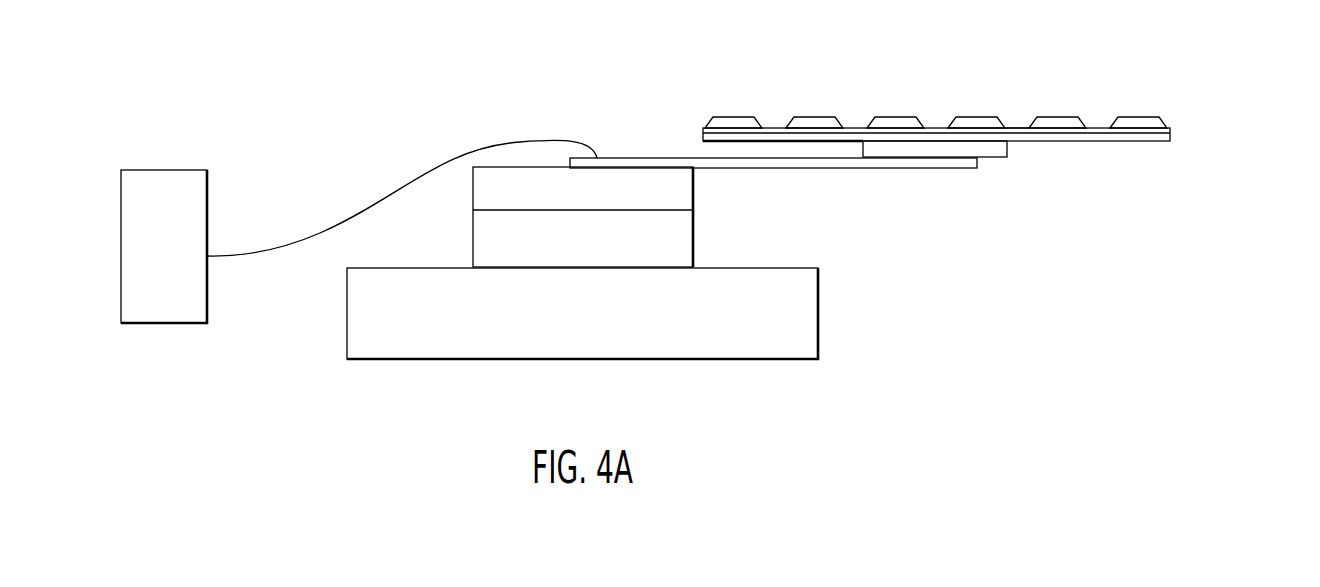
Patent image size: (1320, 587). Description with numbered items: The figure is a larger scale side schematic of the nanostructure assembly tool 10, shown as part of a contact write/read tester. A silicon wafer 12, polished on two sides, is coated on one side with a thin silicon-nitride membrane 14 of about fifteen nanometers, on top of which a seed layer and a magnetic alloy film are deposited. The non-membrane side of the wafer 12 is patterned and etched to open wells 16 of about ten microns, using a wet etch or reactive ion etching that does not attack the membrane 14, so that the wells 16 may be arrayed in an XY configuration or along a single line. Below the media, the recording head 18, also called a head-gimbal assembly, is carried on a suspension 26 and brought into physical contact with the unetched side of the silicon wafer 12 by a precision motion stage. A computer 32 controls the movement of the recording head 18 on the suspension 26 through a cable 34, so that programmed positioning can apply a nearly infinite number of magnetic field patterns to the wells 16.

The nanostructure assembly tool 10 is at (190, 76).
The silicon wafer 12 is at (803, 121).
The silicon-nitride membrane 14 is at (1171, 127).
The wells 16 is at (1013, 127).
The recording head 18 is at (1007, 152).
The suspension 26 is at (807, 163).
The computer 32 is at (157, 307).
The cable 34 is at (305, 238).